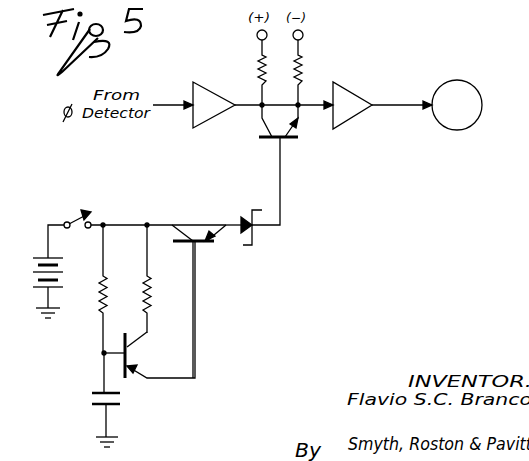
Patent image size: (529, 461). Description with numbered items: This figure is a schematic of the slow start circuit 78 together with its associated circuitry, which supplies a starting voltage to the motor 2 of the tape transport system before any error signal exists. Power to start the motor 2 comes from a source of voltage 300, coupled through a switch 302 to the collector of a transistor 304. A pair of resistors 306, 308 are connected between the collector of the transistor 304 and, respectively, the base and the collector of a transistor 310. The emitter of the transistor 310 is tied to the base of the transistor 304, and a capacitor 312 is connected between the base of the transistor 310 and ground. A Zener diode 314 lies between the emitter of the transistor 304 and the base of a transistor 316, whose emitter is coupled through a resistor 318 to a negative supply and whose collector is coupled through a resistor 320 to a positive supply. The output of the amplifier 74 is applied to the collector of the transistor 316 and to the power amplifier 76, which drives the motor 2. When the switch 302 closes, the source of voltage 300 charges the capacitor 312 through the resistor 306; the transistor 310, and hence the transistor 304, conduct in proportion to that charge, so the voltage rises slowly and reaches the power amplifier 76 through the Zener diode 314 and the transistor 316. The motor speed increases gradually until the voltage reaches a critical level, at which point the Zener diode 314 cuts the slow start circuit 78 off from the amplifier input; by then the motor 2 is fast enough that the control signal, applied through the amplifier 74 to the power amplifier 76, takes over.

The motor 2 is at (466, 84).
The amplifier 74 is at (197, 120).
The power amplifier 76 is at (350, 95).
The slow start circuit 78 is at (245, 269).
The source of voltage 300 is at (62, 275).
The switch 302 is at (93, 214).
The transistor 304 is at (212, 244).
The resistor 306 is at (106, 290).
The resistor 308 is at (150, 302).
The transistor 310 is at (130, 380).
The capacitor 312 is at (95, 393).
The Zener diode 314 is at (244, 218).
The transistor 316 is at (285, 139).
The resistor 318 is at (302, 82).
The resistor 320 is at (259, 80).